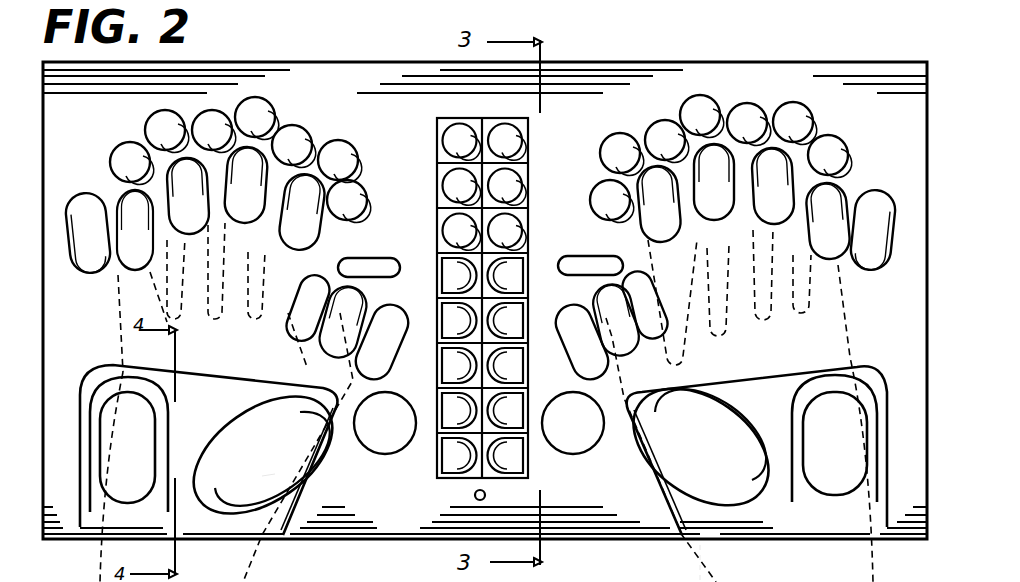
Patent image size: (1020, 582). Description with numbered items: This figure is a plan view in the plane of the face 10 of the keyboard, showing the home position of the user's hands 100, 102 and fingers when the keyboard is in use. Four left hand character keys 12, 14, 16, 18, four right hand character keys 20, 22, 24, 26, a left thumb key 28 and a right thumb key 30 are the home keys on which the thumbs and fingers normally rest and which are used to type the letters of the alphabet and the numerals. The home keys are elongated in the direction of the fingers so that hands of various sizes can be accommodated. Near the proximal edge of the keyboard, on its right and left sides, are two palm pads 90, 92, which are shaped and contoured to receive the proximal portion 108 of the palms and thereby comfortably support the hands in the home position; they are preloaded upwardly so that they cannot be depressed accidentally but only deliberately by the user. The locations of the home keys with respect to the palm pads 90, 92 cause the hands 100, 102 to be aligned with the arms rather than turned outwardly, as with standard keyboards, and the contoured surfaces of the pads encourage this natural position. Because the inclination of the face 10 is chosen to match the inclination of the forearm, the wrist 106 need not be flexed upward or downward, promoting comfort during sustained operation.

The face of the keyboard 10 is at (616, 495).
The left hand character key 12 is at (135, 230).
The left hand character key 14 is at (188, 196).
The left hand character key 16 is at (245, 185).
The left hand character key 18 is at (302, 212).
The right hand character key 20 is at (659, 203).
The right hand character key 22 is at (714, 182).
The right hand character key 24 is at (773, 186).
The right hand character key 26 is at (828, 220).
The left thumb key 28 is at (342, 322).
The right thumb key 30 is at (615, 320).
The palm pad 90 is at (254, 485).
The palm pad 92 is at (715, 477).
The hand 100 is at (160, 363).
The hand 102 is at (785, 342).
The wrist 106 is at (775, 560).
The proximal portion of the palm 108 is at (265, 474).